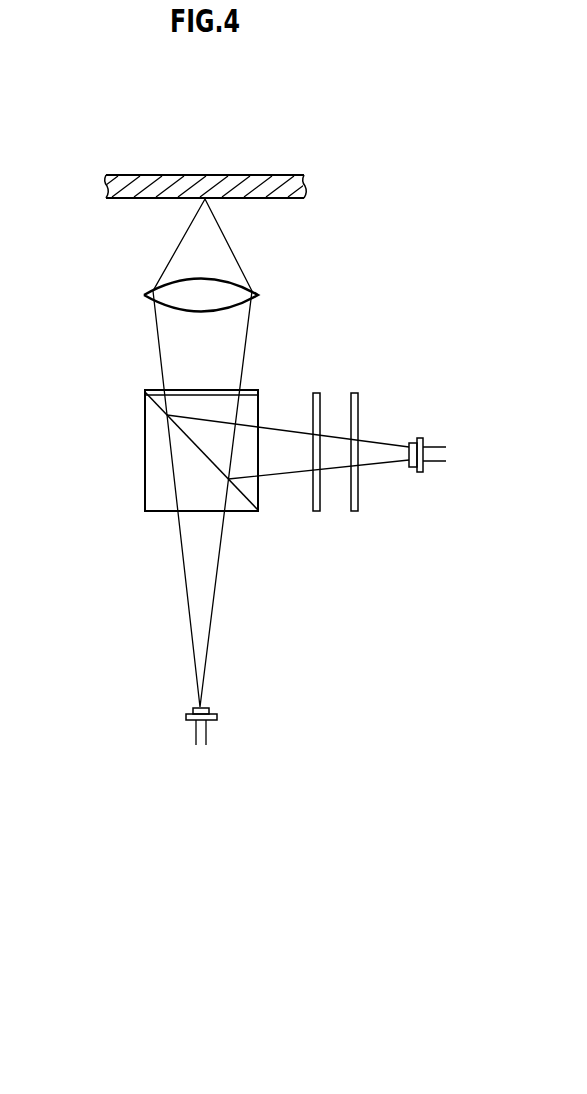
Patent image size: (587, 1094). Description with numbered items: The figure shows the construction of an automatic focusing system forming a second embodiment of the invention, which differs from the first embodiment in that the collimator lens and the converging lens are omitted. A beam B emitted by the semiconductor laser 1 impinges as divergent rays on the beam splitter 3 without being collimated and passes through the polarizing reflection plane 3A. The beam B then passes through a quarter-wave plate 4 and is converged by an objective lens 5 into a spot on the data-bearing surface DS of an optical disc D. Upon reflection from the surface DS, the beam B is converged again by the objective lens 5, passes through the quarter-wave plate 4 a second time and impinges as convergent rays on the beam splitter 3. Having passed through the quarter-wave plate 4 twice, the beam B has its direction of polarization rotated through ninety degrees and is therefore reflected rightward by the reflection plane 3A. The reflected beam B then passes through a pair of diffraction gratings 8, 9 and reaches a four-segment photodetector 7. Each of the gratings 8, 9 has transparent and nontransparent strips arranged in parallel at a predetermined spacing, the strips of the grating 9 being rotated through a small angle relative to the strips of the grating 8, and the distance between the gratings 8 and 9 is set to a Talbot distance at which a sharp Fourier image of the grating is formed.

The optical disc D is at (263, 183).
The data-bearing surface DS is at (278, 202).
The objective lens 5 is at (258, 296).
The beam B is at (215, 612).
The beam splitter 3 is at (144, 490).
The quarter-wave plate 4 is at (144, 391).
The polarizing reflection plane 3A is at (164, 417).
The diffraction grating 8 is at (316, 393).
The diffraction grating 9 is at (354, 393).
The four-segment photodetector 7 is at (410, 440).
The semiconductor laser 1 is at (209, 710).